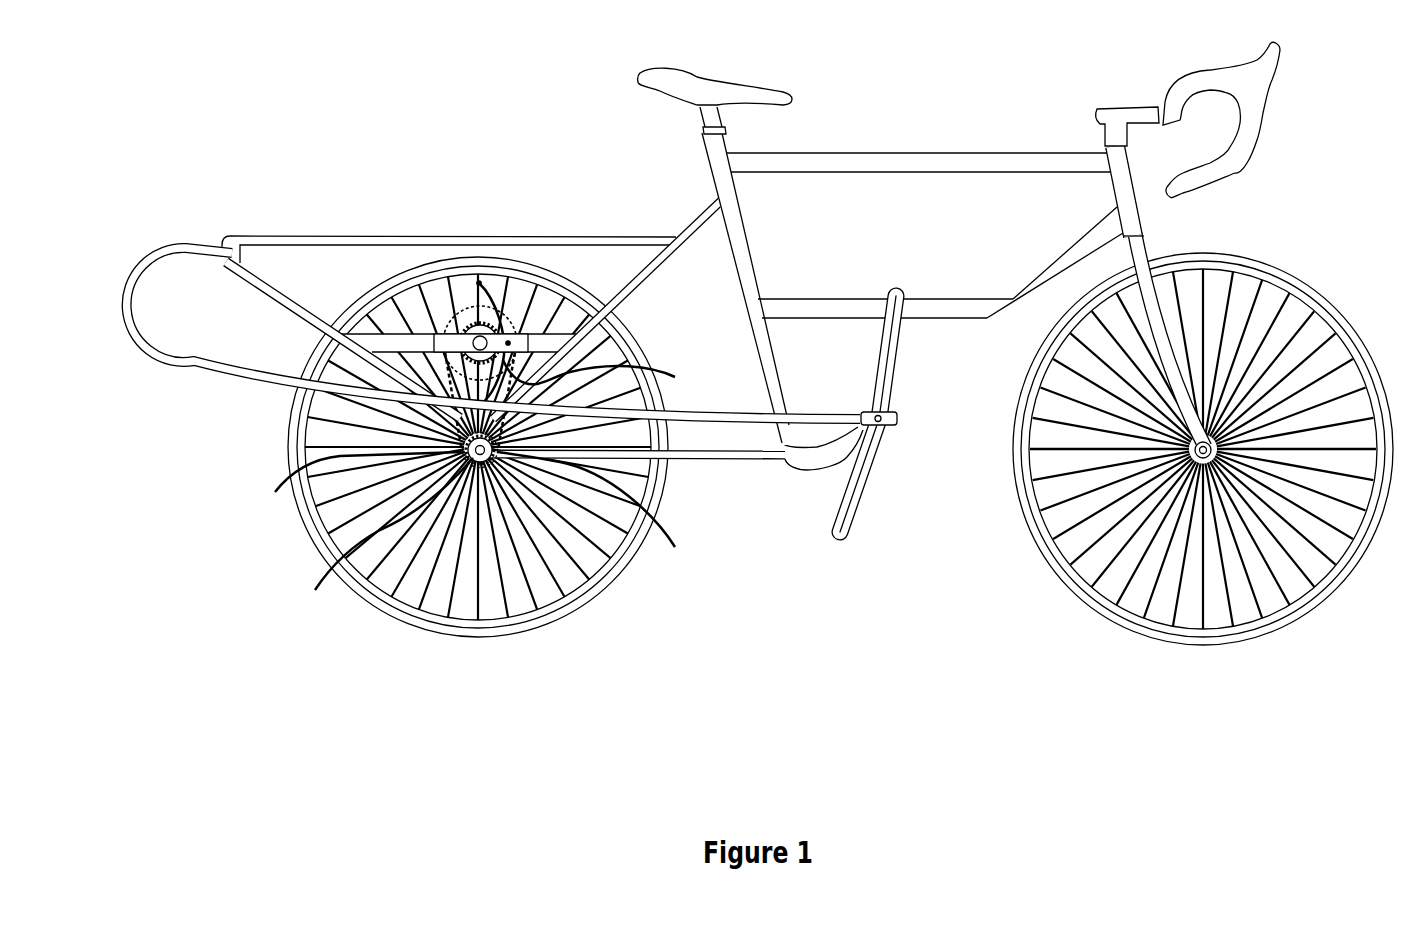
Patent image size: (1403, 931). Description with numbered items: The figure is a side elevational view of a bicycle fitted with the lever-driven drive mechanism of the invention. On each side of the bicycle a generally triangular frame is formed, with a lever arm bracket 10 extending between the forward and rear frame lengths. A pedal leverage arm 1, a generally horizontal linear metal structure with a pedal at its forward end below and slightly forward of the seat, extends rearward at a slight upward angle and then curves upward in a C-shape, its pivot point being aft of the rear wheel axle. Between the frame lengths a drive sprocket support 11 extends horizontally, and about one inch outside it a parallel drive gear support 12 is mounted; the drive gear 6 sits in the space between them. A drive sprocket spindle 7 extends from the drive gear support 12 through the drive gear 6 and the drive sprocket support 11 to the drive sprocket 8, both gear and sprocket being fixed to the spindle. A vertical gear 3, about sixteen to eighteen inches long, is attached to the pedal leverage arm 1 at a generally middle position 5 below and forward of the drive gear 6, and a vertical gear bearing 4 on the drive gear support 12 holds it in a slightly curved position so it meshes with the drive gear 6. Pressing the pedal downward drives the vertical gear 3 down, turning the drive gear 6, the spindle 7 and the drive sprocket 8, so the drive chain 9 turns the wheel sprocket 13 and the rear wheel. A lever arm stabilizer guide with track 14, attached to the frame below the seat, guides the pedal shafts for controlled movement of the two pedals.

The pedal leverage arm 1 is at (234, 385).
The vertical gear 3 is at (481, 283).
The vertical gear bearing 4 is at (509, 342).
The middle position 5 is at (592, 506).
The drive gear 6 is at (473, 330).
The drive sprocket spindle 7 is at (596, 375).
The drive sprocket 8 is at (474, 307).
The drive chain 9 is at (359, 480).
The lever arm bracket 10 is at (295, 241).
The drive sprocket support 11 is at (458, 344).
The drive gear support 12 is at (481, 344).
The wheel sprocket 13 is at (388, 540).
The lever arm stabilizer guide with track 14 is at (873, 470).